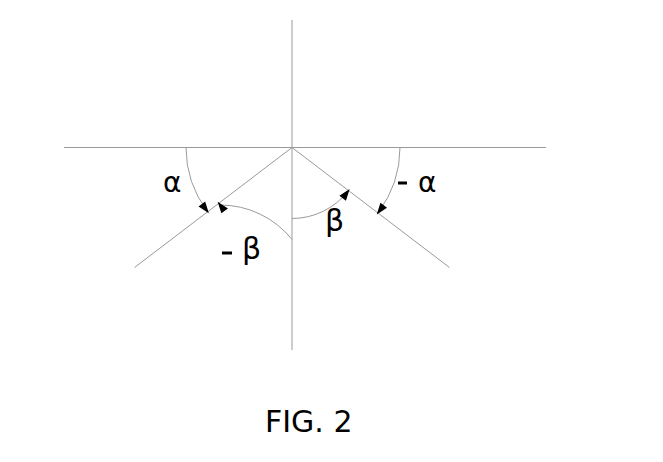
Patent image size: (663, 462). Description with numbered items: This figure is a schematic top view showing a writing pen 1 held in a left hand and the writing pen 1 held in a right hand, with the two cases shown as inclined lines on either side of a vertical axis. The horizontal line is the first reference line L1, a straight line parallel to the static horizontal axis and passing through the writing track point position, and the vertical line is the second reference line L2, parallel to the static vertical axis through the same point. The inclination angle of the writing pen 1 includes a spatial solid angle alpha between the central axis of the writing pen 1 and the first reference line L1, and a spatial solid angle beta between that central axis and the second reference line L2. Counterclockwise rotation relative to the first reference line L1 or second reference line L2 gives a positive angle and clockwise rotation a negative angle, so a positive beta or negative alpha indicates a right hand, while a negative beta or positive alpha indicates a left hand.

The first reference line L1 is at (508, 148).
The second reference line L2 is at (292, 53).
The writing pen 1 is at (167, 242).